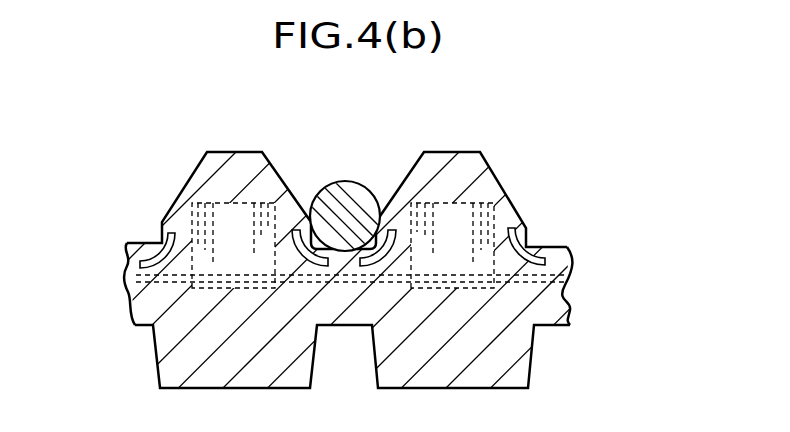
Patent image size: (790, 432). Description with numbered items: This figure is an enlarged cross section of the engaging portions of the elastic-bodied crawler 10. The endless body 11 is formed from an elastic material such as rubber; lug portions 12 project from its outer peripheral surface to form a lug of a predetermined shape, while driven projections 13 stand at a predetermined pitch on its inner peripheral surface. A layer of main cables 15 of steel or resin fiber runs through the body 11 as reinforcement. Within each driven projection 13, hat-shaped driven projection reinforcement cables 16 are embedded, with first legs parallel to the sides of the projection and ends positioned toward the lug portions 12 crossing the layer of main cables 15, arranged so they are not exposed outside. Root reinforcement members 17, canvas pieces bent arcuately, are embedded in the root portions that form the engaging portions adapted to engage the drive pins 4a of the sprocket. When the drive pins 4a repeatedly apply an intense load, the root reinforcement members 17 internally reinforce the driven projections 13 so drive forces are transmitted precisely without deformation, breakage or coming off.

The elastic-bodied crawler 10 is at (586, 257).
The endless body 11 is at (556, 300).
The lug portions 12 is at (520, 368).
The driven projections 13 is at (243, 163).
The main cables 15 is at (138, 240).
The driven projection reinforcement cables 16 is at (498, 210).
The root reinforcement members 17 is at (294, 200).
The drive pins 4a is at (350, 192).